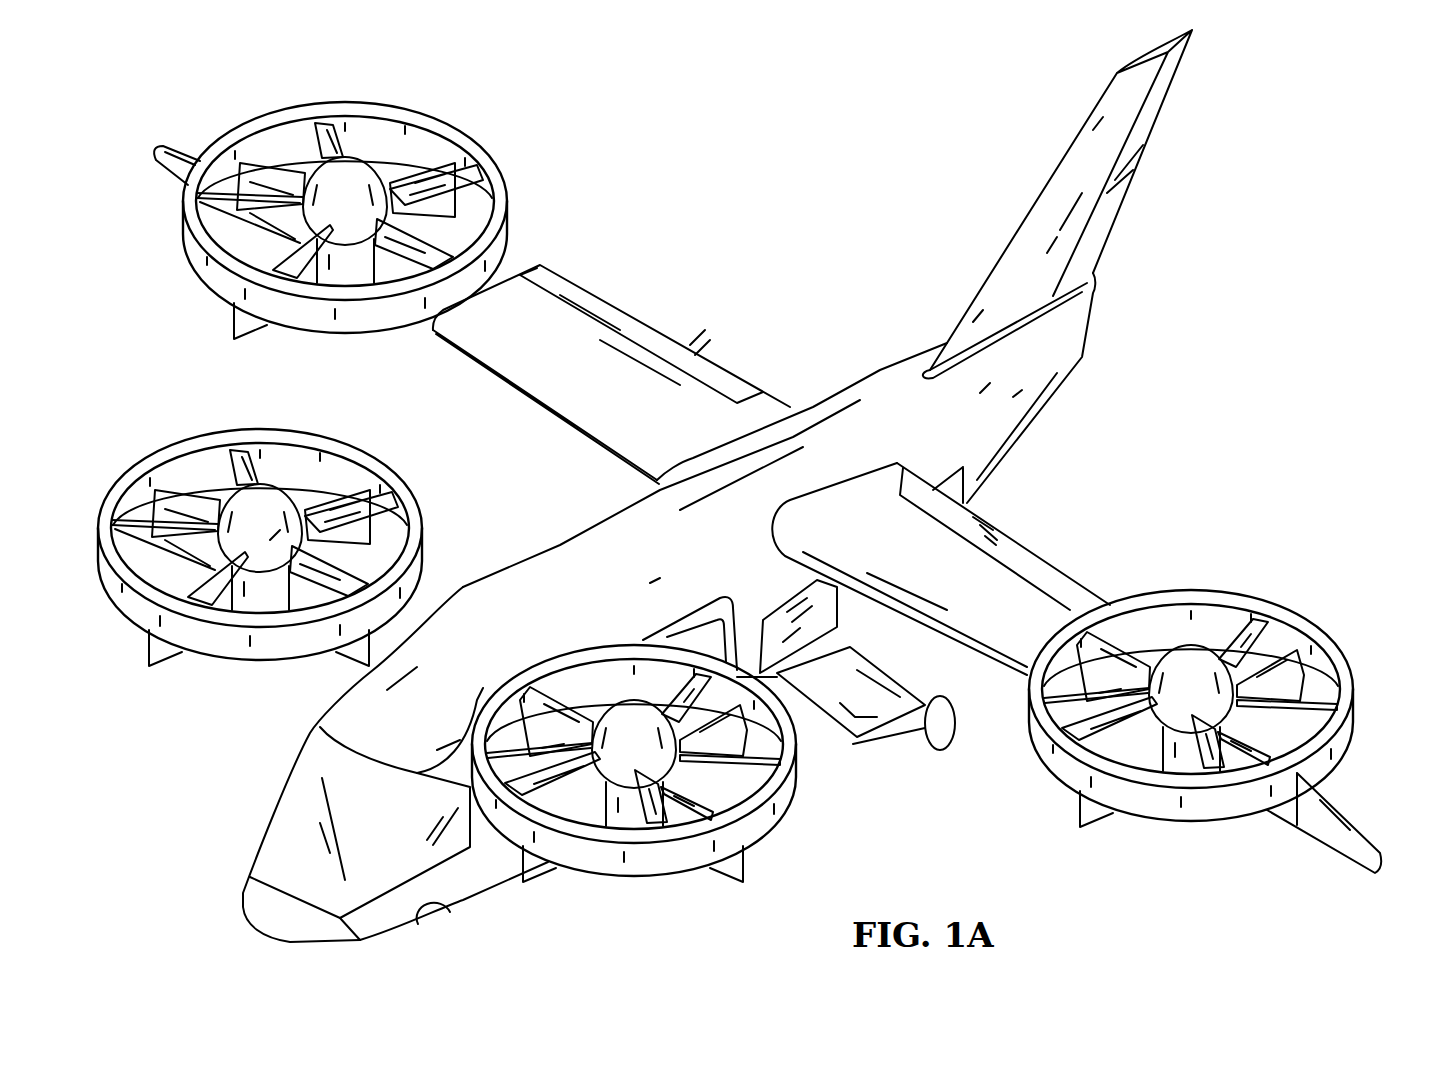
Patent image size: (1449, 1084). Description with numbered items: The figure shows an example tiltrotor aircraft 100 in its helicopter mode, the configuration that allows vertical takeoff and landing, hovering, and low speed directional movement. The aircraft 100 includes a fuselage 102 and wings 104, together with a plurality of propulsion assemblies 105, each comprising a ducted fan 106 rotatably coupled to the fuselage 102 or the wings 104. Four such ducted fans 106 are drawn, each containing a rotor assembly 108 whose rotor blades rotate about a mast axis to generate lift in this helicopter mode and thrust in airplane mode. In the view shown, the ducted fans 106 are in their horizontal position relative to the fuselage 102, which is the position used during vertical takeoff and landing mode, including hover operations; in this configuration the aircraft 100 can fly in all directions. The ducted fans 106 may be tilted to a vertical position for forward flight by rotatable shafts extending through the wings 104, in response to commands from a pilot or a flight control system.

The tiltrotor aircraft 100 is at (1277, 161).
The fuselage 102 is at (560, 540).
The wings 104 is at (548, 405).
The propulsion assemblies 105 is at (277, 102).
The ducted fan 106 is at (510, 228).
The rotor assembly 108 is at (364, 162).